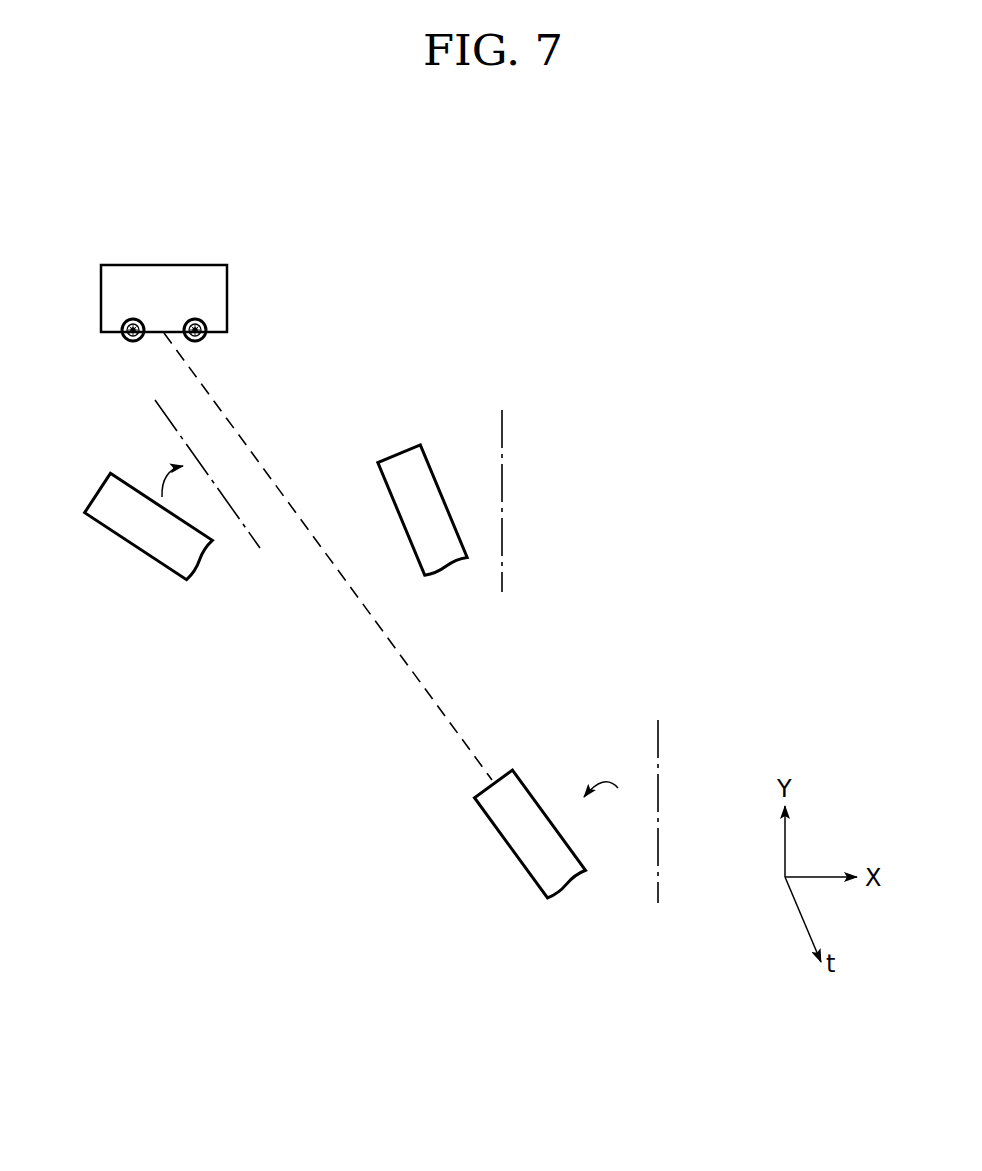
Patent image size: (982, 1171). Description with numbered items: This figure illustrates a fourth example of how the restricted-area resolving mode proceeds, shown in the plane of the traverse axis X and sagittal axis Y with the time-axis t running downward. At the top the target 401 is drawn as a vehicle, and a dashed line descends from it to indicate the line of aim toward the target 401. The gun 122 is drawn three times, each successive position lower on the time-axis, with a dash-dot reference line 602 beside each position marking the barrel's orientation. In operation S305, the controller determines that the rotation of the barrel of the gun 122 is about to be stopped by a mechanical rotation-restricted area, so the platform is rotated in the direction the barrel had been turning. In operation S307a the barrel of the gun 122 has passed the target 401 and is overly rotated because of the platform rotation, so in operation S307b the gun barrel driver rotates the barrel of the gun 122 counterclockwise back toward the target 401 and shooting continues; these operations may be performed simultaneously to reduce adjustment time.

The target 401 is at (167, 263).
The reference line 602 is at (172, 424).
The gun 122 is at (336, 672).
The operation S305 is at (123, 552).
The operation S307a is at (534, 544).
The operation S307b is at (481, 845).